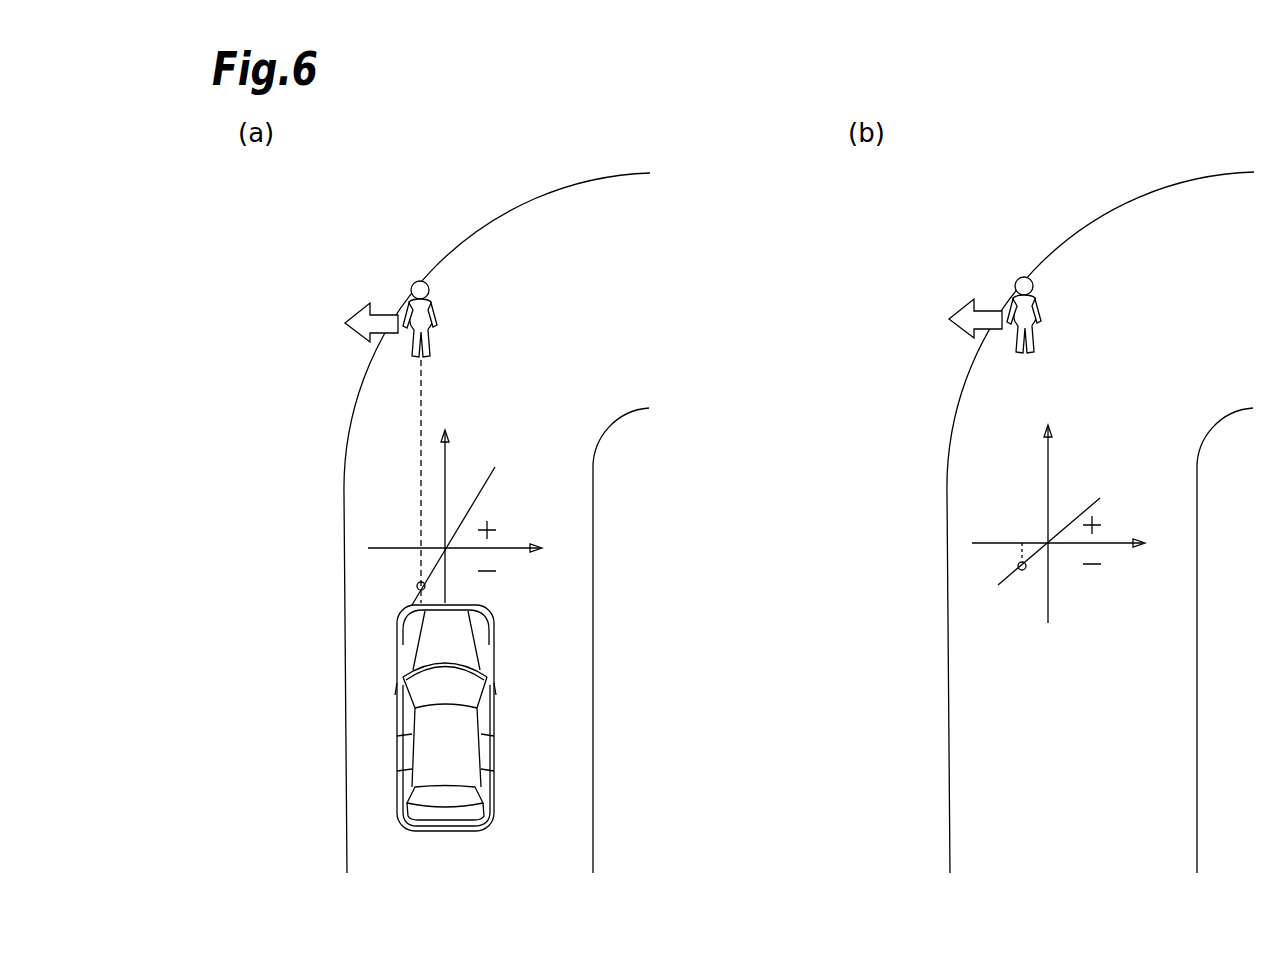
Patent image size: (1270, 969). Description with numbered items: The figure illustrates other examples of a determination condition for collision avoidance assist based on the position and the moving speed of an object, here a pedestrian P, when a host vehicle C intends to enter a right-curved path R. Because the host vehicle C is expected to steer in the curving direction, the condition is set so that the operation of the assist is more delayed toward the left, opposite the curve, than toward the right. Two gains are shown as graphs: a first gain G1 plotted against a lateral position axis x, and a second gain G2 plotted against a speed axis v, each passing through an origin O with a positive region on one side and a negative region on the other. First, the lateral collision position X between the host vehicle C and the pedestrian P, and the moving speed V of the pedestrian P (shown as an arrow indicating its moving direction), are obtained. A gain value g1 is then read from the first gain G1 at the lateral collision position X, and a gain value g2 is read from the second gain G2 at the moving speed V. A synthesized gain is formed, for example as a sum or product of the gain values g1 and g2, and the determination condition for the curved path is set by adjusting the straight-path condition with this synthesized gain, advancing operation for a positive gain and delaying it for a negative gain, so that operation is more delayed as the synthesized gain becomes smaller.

The right-curved path R is at (355, 407).
The pedestrian P is at (433, 306).
The moving speed of the object V is at (678, 428).
The host vehicle C is at (494, 717).
The gain value g1 is at (417, 588).
The gain value g2 is at (1023, 571).
The first gain G1 is at (466, 513).
The second gain G2 is at (1069, 523).
The lateral position axis x is at (464, 549).
The lateral collision position X is at (400, 571).
The origin O is at (761, 568).
The velocity axis v is at (1069, 544).